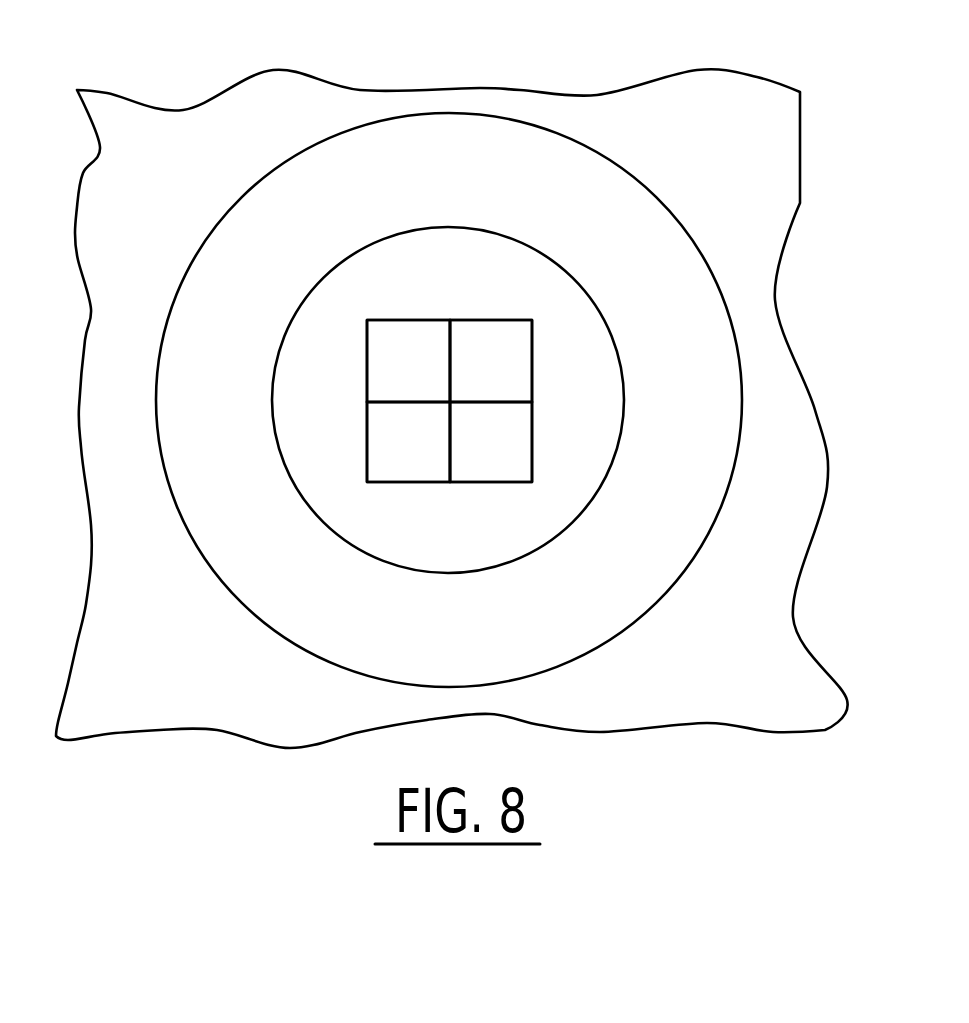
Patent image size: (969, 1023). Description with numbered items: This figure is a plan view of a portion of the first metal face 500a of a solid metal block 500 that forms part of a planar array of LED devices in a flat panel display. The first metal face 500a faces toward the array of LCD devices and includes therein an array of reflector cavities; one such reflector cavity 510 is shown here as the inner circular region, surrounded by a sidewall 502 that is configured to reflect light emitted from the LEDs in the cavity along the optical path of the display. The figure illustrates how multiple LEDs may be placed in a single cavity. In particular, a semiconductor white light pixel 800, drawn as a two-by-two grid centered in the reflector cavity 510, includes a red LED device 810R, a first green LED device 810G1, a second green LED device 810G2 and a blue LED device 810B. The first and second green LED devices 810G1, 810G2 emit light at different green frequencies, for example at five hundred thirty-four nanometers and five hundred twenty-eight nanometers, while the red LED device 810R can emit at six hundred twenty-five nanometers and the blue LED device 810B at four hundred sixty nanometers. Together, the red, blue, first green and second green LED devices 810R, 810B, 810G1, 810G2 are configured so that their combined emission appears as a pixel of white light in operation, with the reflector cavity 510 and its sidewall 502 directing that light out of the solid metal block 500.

The solid metal block 500 is at (521, 80).
The first metal face 500a is at (207, 168).
The sidewall 502 is at (473, 188).
The reflector cavity 510 is at (475, 292).
The semiconductor white light pixel 800 is at (488, 498).
The red LED device 810R is at (388, 326).
The first green LED device 810G1 is at (518, 367).
The second green LED device 810G2 is at (388, 467).
The blue LED device 810B is at (518, 452).